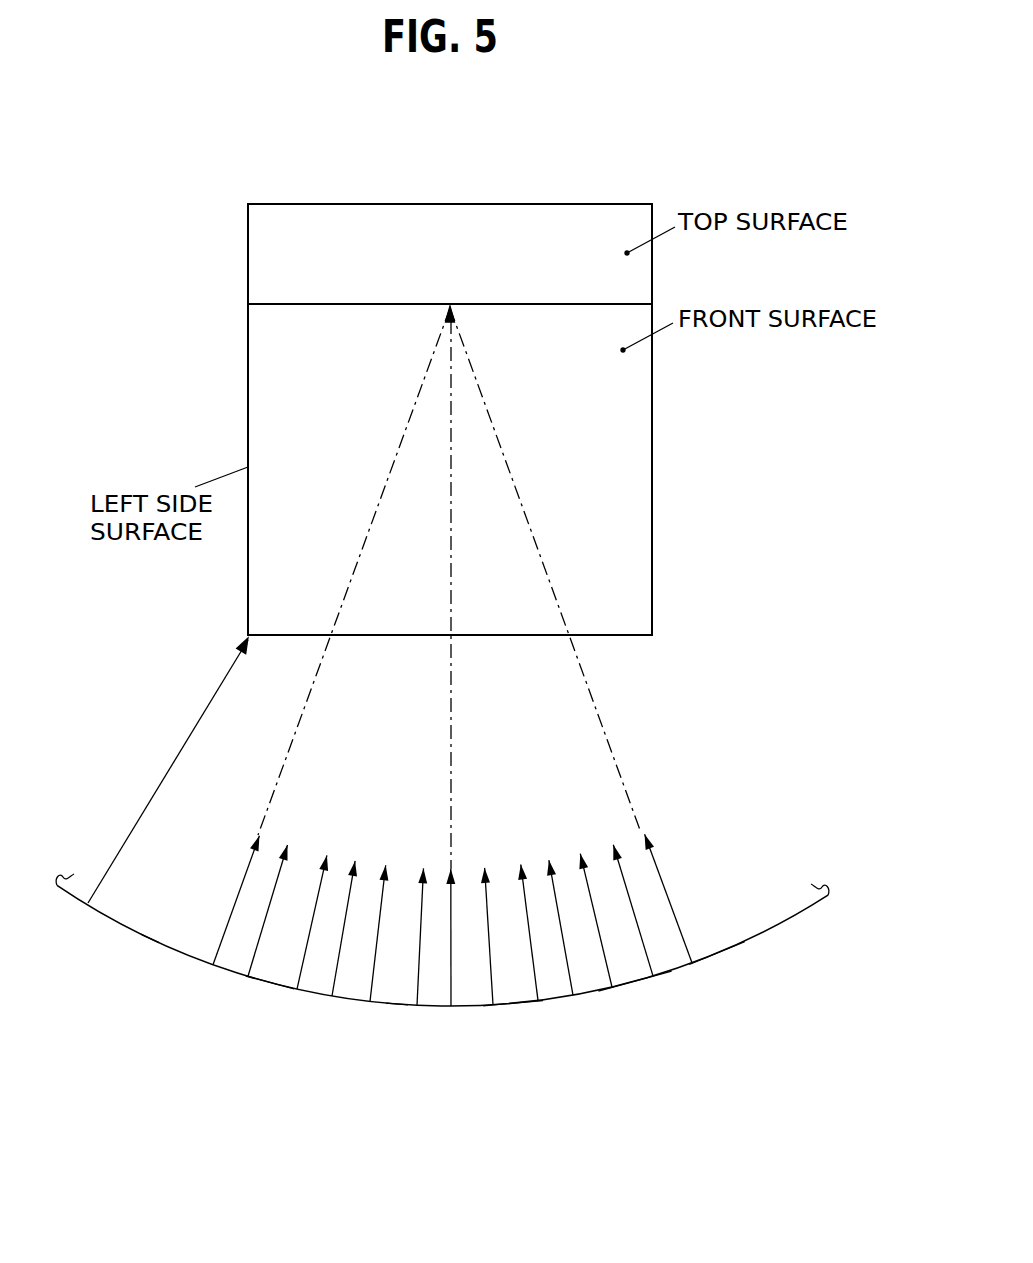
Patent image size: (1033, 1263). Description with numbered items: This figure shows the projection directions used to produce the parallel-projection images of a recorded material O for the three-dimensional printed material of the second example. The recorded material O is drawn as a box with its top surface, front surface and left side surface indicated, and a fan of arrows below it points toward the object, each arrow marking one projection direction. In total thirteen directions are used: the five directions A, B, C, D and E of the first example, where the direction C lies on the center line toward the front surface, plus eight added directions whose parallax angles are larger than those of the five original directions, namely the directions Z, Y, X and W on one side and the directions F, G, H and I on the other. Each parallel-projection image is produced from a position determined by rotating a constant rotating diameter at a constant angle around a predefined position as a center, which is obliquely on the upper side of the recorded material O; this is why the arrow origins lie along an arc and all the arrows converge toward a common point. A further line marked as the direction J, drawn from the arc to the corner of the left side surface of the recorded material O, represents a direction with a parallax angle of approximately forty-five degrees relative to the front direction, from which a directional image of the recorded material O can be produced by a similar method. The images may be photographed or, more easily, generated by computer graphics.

The recorded material O is at (635, 386).
The direction J is at (168, 770).
The direction I is at (228, 925).
The direction H is at (259, 939).
The direction G is at (304, 950).
The direction F is at (336, 957).
The direction E is at (374, 963).
The direction D is at (417, 967).
The direction C is at (456, 968).
The direction B is at (493, 968).
The direction A is at (534, 965).
The direction Z is at (568, 960).
The direction Y is at (604, 954).
The direction X is at (642, 944).
The direction W is at (682, 933).